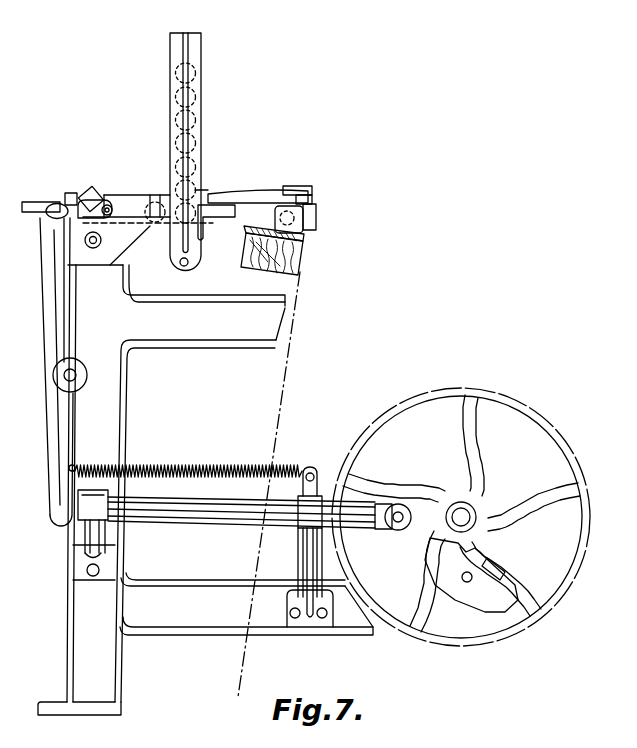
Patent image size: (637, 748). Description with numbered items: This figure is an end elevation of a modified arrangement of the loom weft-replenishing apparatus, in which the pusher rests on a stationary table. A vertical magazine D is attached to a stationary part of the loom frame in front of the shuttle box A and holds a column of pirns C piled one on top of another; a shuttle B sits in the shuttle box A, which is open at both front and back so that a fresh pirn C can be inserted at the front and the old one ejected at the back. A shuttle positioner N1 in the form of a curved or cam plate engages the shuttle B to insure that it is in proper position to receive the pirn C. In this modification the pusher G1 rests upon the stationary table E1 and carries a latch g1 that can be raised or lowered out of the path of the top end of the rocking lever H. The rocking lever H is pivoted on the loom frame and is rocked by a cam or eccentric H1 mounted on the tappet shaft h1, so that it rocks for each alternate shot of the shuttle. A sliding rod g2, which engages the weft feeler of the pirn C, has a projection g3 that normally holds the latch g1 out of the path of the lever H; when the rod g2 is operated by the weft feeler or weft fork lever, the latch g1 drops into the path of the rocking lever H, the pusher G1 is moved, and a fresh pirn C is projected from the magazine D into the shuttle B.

The magazine D is at (193, 55).
The pirn C is at (190, 97).
The shuttle positioner N1 is at (227, 194).
The shuttle box A is at (280, 222).
The shuttle B is at (296, 238).
The stationary table E1 is at (216, 228).
The pusher G1 is at (142, 212).
The latch g1 is at (108, 196).
The sliding rod g2 is at (36, 202).
The projection g3 is at (77, 193).
The rocking lever H is at (60, 327).
The tappet shaft h1 is at (470, 513).
The cam or eccentric H1 is at (471, 575).